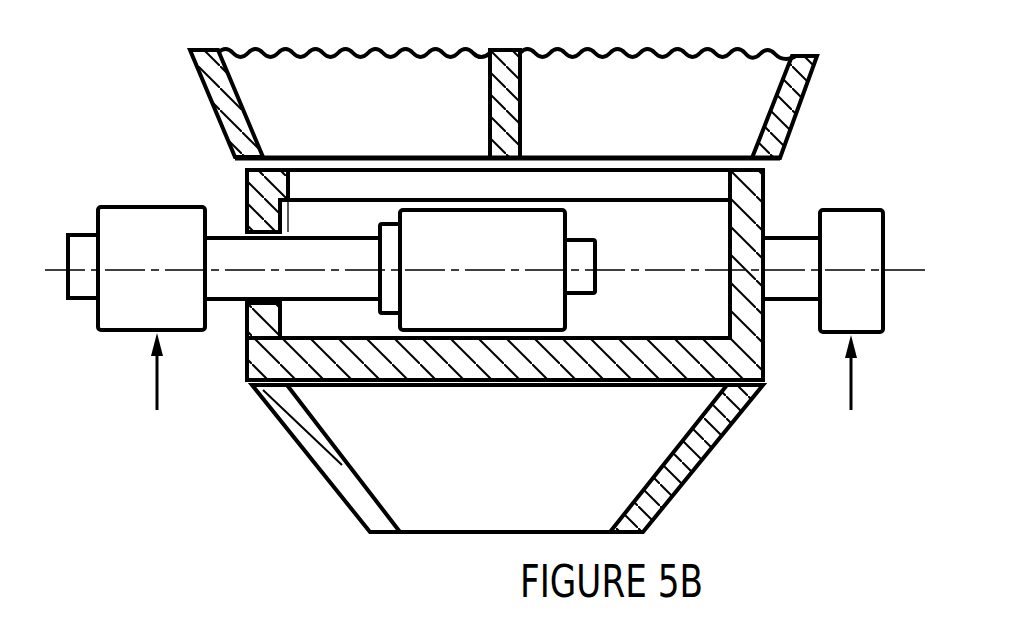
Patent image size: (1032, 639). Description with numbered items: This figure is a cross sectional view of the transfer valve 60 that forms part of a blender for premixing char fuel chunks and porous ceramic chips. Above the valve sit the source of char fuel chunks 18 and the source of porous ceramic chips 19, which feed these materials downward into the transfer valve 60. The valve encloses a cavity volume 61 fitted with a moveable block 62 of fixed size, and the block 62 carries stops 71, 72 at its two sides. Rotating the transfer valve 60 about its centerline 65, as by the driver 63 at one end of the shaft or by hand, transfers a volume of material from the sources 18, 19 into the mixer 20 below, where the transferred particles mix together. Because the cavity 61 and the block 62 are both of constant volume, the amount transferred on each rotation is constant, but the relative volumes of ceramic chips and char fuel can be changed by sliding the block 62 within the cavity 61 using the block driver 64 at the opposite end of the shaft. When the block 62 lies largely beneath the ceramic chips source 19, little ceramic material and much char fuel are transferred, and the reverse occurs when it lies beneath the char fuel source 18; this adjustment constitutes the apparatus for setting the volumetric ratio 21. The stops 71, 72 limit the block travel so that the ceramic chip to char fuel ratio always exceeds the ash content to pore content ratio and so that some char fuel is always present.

The source of char fuel chunks 18 is at (268, 78).
The source of porous ceramic chips 19 is at (725, 88).
The mixer 20 is at (627, 447).
The apparatus for setting the volumetric ratio 21 is at (250, 342).
The transfer valve 60 is at (730, 350).
The cavity volume 61 is at (690, 240).
The moveable block 62 is at (507, 248).
The driver 63 is at (848, 238).
The block driver 64 is at (152, 214).
The centerline 65 is at (238, 268).
The stop 71 is at (587, 240).
The stop 72 is at (383, 224).